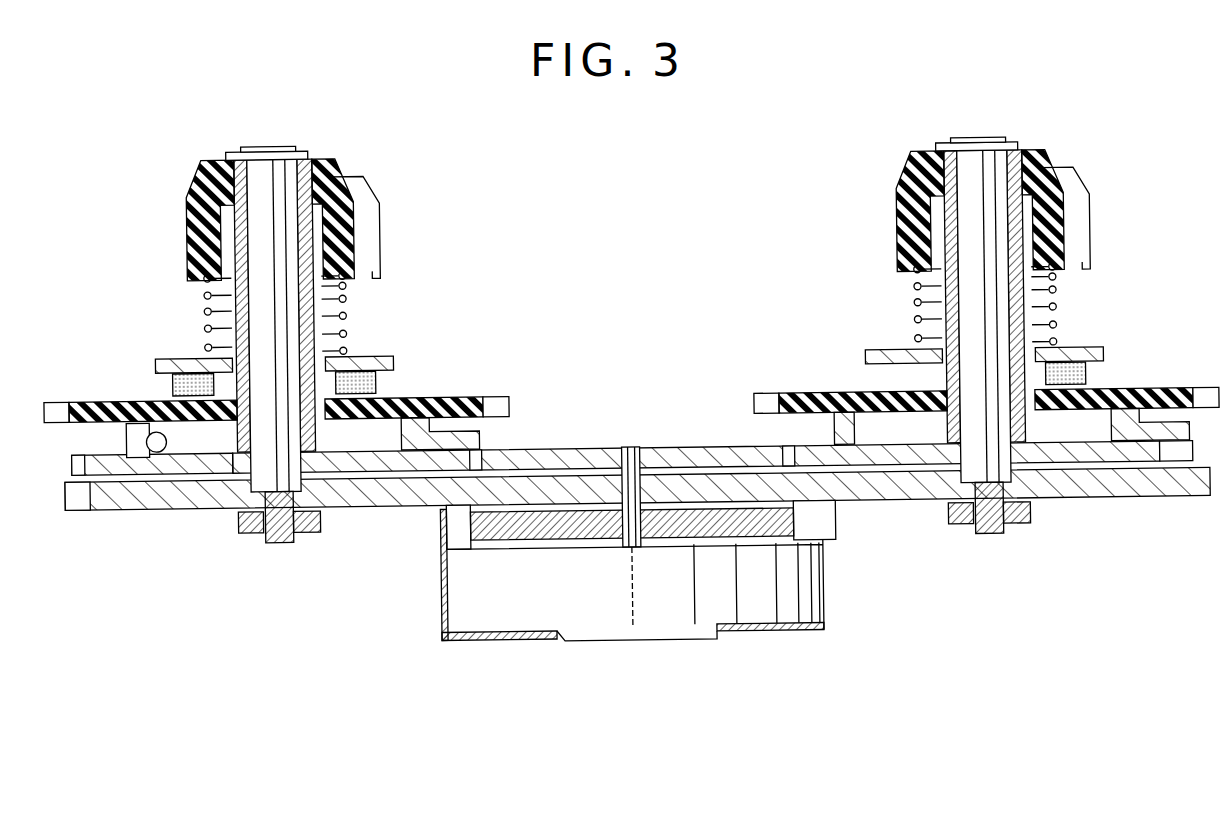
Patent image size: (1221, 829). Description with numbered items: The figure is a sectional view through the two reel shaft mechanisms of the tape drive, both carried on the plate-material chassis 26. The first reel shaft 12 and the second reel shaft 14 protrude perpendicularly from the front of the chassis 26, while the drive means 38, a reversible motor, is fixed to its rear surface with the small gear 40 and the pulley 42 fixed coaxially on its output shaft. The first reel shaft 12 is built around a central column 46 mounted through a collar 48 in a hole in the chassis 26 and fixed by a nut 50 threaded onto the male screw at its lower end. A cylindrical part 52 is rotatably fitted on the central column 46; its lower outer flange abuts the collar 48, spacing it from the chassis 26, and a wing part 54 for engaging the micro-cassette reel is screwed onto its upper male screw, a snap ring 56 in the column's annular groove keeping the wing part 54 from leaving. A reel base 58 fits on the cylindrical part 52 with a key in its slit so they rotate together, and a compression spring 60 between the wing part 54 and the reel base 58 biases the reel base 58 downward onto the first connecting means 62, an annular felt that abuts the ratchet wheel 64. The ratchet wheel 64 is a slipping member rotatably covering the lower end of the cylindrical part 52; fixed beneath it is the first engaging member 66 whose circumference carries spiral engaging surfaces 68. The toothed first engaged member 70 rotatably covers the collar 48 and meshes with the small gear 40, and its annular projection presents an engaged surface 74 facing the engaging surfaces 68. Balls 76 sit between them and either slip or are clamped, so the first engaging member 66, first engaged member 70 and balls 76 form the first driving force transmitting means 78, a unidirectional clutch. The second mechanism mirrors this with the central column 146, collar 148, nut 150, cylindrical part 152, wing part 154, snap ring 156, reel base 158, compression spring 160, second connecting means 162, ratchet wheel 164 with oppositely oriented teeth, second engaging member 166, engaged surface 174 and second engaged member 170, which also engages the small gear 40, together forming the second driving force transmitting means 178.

The first reel shaft 12 is at (307, 305).
The second reel shaft 14 is at (1016, 295).
The chassis 26 is at (145, 500).
The drive means 38 is at (822, 580).
The small gear 40 is at (628, 450).
The pulley 42 is at (793, 524).
The central column 46 is at (273, 305).
The collar 48 is at (314, 517).
The nut 50 is at (289, 535).
The cylindrical part 52 is at (348, 313).
The wing part 54 is at (372, 230).
The snap ring 56 is at (258, 139).
The reel base 58 is at (375, 355).
The compression spring 60 is at (199, 313).
The first connecting means 62 is at (379, 383).
The ratchet wheel 64 is at (276, 392).
The first engaging member 66 is at (176, 372).
The engaging surfaces 68 is at (151, 377).
The first engaged member 70 is at (90, 495).
The engaged surface 74 is at (440, 431).
The balls 76 is at (129, 437).
The first driving force transmitting means 78 is at (92, 433).
The central column 146 is at (983, 297).
The collar 148 is at (1025, 507).
The nut 150 is at (1002, 525).
The cylindrical part 152 is at (1062, 303).
The wing part 154 is at (1096, 221).
The snap ring 156 is at (957, 131).
The reel base 158 is at (1089, 346).
The compression spring 160 is at (900, 303).
The second connecting means 162 is at (1094, 372).
The ratchet wheel 164 is at (984, 384).
The second engaging member 166 is at (875, 366).
The second engaged member 170 is at (1185, 452).
The engaged surface 174 is at (1150, 423).
The second driving force transmitting means 178 is at (778, 422).